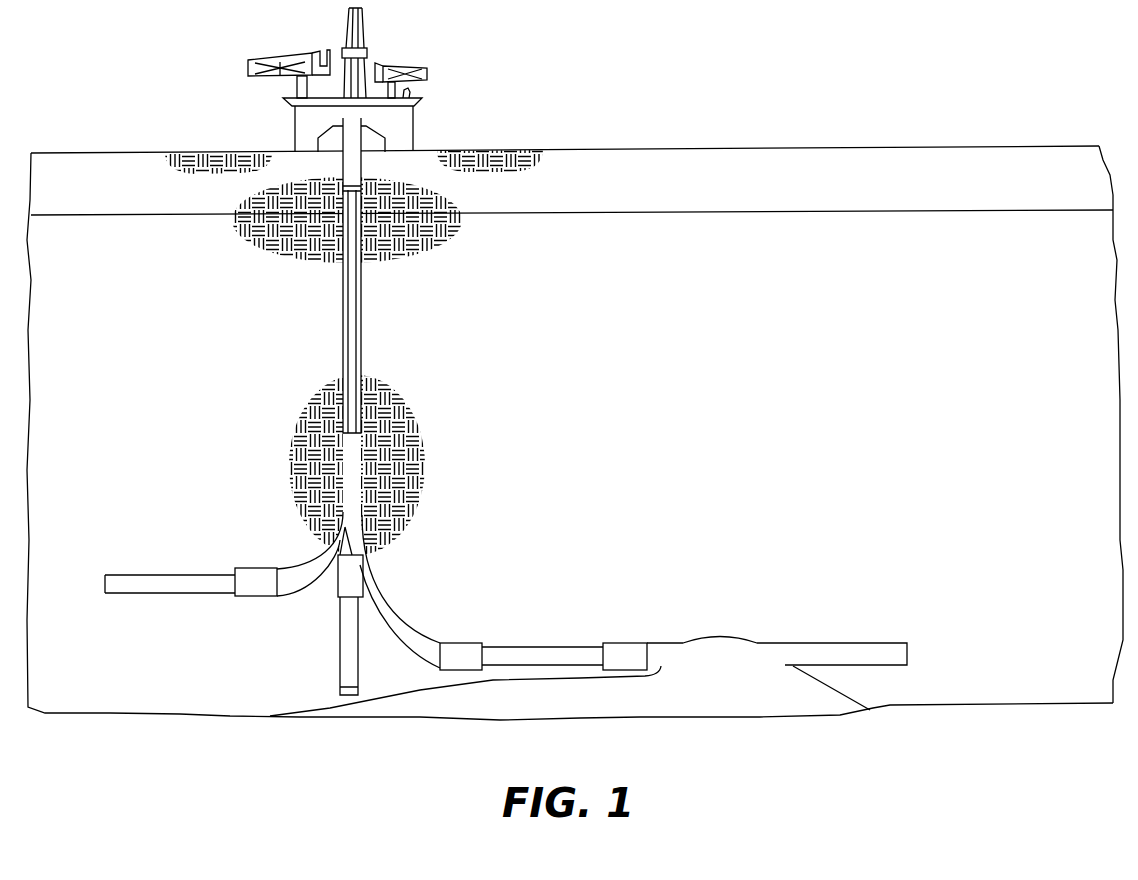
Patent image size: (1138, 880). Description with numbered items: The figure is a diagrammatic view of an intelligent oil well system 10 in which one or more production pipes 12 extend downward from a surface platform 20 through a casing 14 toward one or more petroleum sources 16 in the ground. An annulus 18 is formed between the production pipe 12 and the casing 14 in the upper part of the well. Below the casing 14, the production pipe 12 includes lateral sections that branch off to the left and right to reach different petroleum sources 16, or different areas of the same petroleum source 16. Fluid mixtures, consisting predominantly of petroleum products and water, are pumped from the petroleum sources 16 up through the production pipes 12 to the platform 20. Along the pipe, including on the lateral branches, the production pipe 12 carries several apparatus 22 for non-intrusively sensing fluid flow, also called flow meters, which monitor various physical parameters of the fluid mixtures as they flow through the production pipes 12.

The intelligent oil well system 10 is at (392, 175).
The production pipe 12 is at (356, 335).
The casing 14 is at (343, 281).
The petroleum source 16 is at (724, 710).
The annulus 18 is at (358, 280).
The platform 20 is at (285, 100).
The apparatus for non-intrusively sensing fluid flow 22 is at (250, 575).